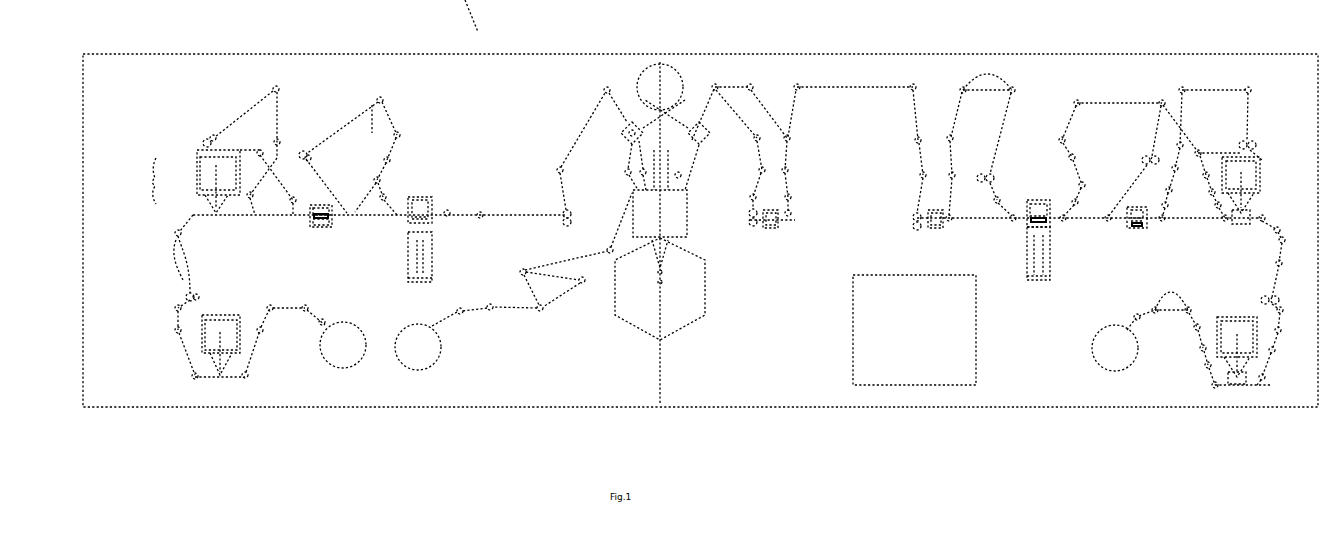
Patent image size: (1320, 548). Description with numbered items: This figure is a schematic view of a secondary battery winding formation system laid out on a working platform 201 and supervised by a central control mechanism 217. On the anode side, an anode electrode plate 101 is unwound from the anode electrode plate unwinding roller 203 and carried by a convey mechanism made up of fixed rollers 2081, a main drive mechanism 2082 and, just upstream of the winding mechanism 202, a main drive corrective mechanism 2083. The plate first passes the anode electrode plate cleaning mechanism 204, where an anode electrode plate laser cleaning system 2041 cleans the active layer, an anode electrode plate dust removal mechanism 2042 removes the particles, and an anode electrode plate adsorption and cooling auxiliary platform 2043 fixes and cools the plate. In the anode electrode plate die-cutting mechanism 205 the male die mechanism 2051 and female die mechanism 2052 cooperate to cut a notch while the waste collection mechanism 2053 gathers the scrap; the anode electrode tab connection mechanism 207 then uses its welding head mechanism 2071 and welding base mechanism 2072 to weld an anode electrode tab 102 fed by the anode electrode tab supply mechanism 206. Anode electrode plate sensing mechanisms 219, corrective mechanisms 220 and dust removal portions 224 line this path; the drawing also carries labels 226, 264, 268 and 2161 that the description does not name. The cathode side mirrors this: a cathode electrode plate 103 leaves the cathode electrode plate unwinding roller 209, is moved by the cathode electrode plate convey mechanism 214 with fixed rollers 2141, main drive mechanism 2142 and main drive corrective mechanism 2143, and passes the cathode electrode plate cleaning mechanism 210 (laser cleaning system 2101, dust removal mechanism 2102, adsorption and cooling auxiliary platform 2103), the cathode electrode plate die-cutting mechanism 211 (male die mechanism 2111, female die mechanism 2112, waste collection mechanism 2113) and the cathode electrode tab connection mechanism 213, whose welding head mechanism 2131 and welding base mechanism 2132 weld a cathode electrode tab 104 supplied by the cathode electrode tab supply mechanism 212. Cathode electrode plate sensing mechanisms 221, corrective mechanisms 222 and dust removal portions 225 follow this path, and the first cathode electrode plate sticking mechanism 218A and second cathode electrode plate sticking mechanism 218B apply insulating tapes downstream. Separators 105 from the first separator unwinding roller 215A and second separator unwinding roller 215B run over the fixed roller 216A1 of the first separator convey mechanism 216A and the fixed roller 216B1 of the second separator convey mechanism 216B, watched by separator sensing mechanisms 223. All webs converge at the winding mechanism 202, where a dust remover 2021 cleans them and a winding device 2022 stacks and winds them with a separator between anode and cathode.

The working platform 201 is at (158, 67).
The anode electrode plate cleaning mechanism 204 is at (143, 181).
The anode electrode plate laser cleaning system 2041 is at (198, 175).
The anode electrode plate dust removal mechanism 2042 is at (200, 195).
The anode electrode plate adsorption and cooling auxiliary platform 2043 is at (218, 220).
The fixed roller 2081 is at (279, 88).
The main drive mechanism 2082 is at (207, 138).
The main drive corrective mechanism 2083 is at (620, 135).
The anode electrode plate corrective mechanism 220 is at (281, 148).
The anode electrode plate sensing mechanism 219 is at (173, 233).
The anode electrode plate dust removal portion 224 is at (255, 200).
The conveying path 226 is at (181, 262).
The conveying path 268 is at (213, 263).
The conveying path 264 is at (224, 312).
The anode electrode plate die-cutting mechanism 205 is at (312, 228).
The anode electrode plate die-cutting male die mechanism 2051 is at (318, 204).
The anode electrode plate die-cutting female die mechanism 2052 is at (331, 216).
The anode electrode plate die-cut waste collection mechanism 2053 is at (324, 228).
The anode electrode plate unwinding roller 203 is at (355, 358).
The anode electrode plate 101 is at (332, 320).
The anode electrode tab connection mechanism 207 is at (420, 196).
The anode electrode tab welding head mechanism 2071 is at (430, 208).
The anode electrode tab welding base mechanism 2072 is at (431, 222).
The anode electrode tab 102 is at (434, 253).
The anode electrode tab supply mechanism 206 is at (434, 278).
The first separator convey mechanism 216A is at (503, 288).
The fixed roller 216A1 is at (538, 305).
The folding guide 2161 is at (625, 176).
The cathode electrode plate dust removal portion 225 is at (460, 308).
The cathode electrode plate 103 is at (455, 312).
The first separator unwinding roller 215A is at (418, 358).
The second separator unwinding roller 215B is at (676, 80).
The separator sensing mechanism 223 is at (670, 118).
The separator 105 is at (632, 119).
The main drive corrective mechanism 2143 is at (703, 146).
The second separator convey mechanism 216B is at (672, 178).
The fixed roller 216B1 is at (669, 170).
The dust remover 2021 is at (688, 212).
The winding mechanism 202 is at (632, 335).
The winding device 2022 is at (672, 320).
The central control mechanism 217 is at (856, 353).
The cathode electrode plate convey mechanism 214 is at (920, 88).
The fixed roller 2141 is at (716, 84).
The main drive mechanism 2142 is at (749, 214).
The cathode electrode plate corrective mechanism 222 is at (786, 135).
The cathode electrode plate sensing mechanism 221 is at (791, 197).
The second cathode electrode plate sticking mechanism 218B is at (772, 210).
The first cathode electrode plate sticking mechanism 218A is at (933, 210).
The cathode electrode tab connection mechanism 213 is at (1043, 200).
The cathode electrode tab welding head mechanism 2131 is at (1028, 203).
The cathode electrode tab welding base mechanism 2132 is at (1027, 232).
The cathode electrode tab 104 is at (1049, 245).
The cathode electrode tab supply mechanism 212 is at (1027, 276).
The cathode electrode plate die-cutting mechanism 211 is at (1147, 230).
The cathode electrode plate die-cutting male die mechanism 2111 is at (1138, 206).
The cathode electrode plate die-cutting female die mechanism 2112 is at (1130, 228).
The cathode electrode plate die-cut waste collection mechanism 2113 is at (1136, 230).
The cathode electrode plate cleaning mechanism 210 is at (1262, 161).
The cathode electrode plate laser cleaning system 2101 is at (1262, 180).
The cathode electrode plate dust removal mechanism 2102 is at (1263, 213).
The cathode electrode plate adsorption and cooling auxiliary platform 2103 is at (1241, 227).
The cathode electrode plate unwinding roller 209 is at (1107, 359).